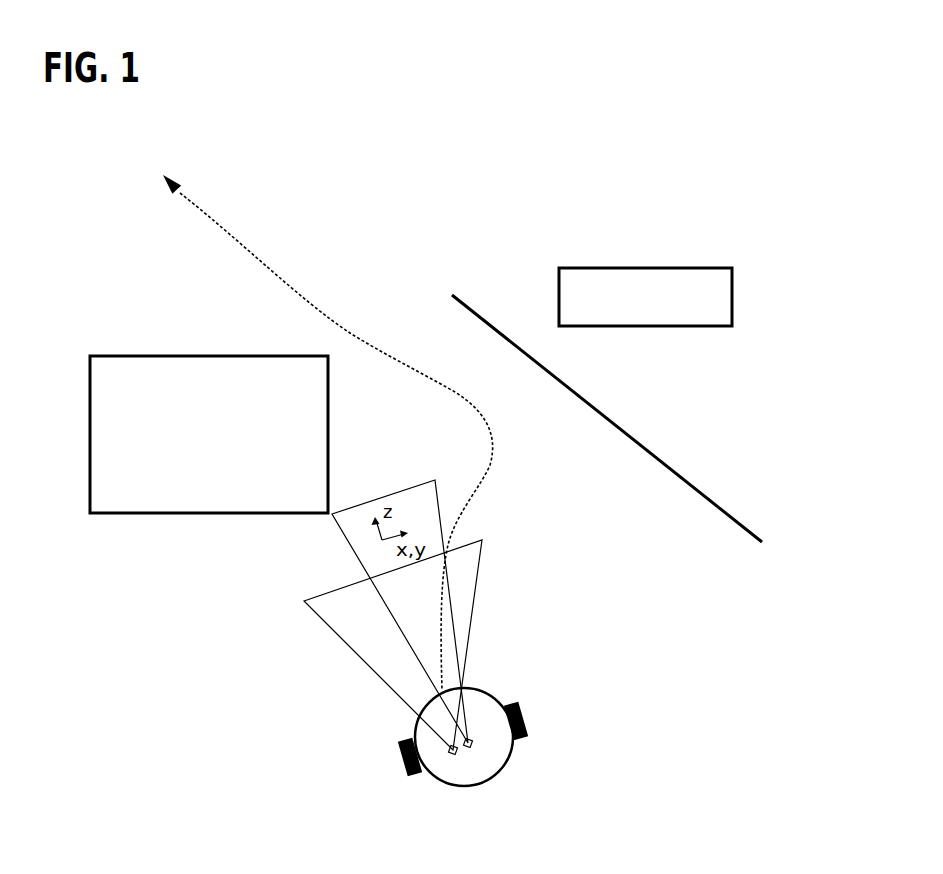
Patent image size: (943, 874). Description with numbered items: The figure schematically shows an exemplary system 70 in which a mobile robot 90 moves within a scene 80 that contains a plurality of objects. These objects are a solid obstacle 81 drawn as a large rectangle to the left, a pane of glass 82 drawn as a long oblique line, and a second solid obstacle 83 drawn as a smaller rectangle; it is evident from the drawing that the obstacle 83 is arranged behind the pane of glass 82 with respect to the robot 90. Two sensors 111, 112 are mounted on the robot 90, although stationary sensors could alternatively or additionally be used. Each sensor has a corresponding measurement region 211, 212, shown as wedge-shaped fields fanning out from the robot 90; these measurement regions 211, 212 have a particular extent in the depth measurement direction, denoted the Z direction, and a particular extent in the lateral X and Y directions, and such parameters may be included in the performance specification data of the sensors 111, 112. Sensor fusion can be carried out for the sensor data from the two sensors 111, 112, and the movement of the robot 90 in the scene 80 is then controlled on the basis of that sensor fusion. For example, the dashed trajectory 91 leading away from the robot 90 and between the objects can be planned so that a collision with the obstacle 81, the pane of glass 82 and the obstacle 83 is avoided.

The system 70 is at (765, 117).
The scene 80 is at (559, 523).
The solid obstacle 81 is at (200, 505).
The pane of glass 82 is at (743, 530).
The solid obstacle 83 is at (703, 322).
The mobile robot 90 is at (495, 700).
The trajectory 91 is at (407, 367).
The sensor 111 is at (455, 754).
The sensor 112 is at (471, 747).
The measurement region 211 is at (340, 638).
The measurement region 212 is at (335, 512).